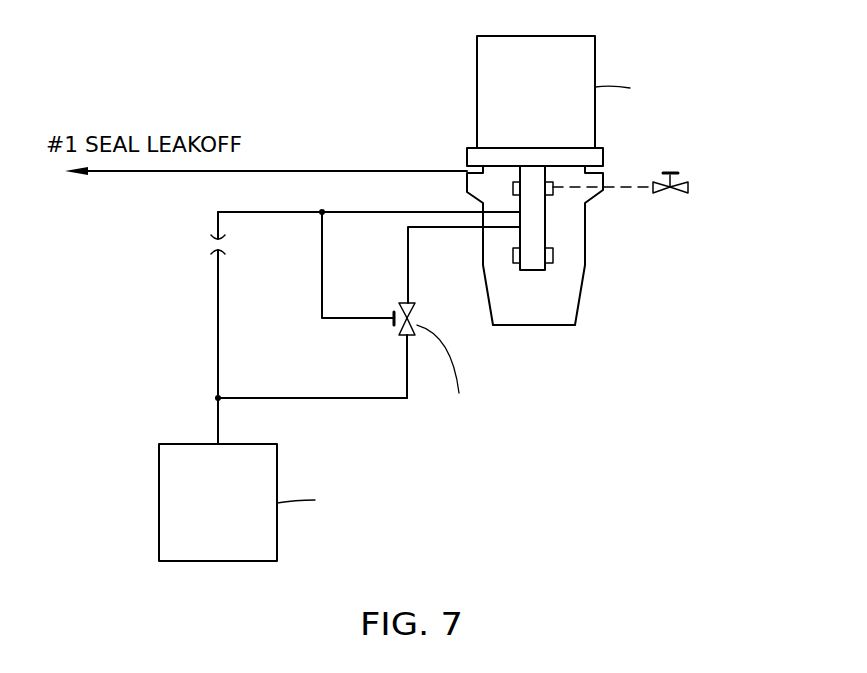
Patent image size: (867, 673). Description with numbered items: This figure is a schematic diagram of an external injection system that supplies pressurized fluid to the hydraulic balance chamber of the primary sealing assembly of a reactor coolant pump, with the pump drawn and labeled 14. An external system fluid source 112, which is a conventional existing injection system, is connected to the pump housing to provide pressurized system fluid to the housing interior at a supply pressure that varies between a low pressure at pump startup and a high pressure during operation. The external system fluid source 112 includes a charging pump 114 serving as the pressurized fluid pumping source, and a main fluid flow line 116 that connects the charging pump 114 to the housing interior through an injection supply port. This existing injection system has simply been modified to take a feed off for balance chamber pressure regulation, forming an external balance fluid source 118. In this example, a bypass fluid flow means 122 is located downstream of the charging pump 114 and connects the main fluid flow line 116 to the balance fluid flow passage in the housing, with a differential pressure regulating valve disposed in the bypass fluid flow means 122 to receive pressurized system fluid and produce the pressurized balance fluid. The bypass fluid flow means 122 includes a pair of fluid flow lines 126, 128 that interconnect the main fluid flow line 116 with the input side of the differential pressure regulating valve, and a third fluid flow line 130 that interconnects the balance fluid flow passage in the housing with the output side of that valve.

The reactor coolant pump 14 is at (477, 64).
The external system fluid source 112 is at (142, 381).
The charging pump 114 is at (159, 487).
The main fluid flow line 116 is at (355, 212).
The external balance fluid source 118 is at (305, 260).
The bypass fluid flow means 122 is at (418, 406).
The fluid flow line 126 is at (294, 401).
The fluid flow line 128 is at (362, 320).
The third fluid flow line 130 is at (409, 262).